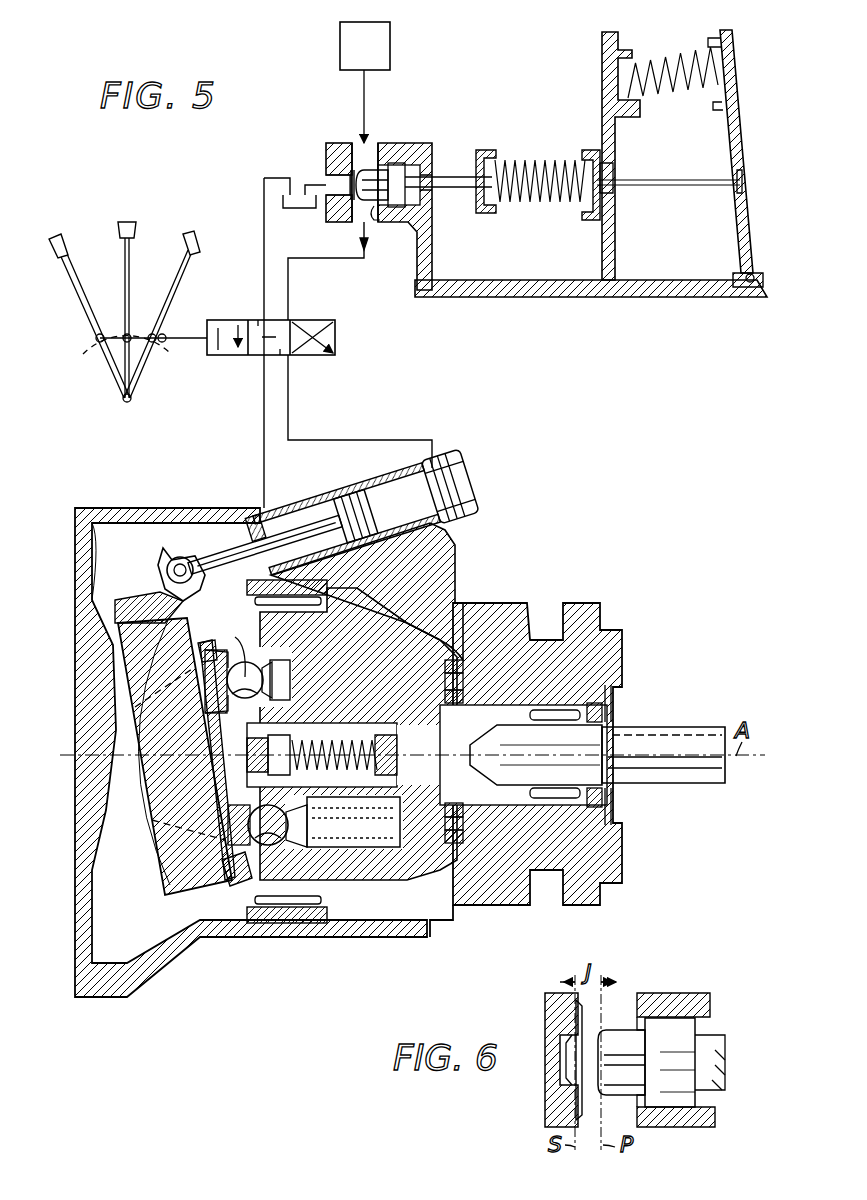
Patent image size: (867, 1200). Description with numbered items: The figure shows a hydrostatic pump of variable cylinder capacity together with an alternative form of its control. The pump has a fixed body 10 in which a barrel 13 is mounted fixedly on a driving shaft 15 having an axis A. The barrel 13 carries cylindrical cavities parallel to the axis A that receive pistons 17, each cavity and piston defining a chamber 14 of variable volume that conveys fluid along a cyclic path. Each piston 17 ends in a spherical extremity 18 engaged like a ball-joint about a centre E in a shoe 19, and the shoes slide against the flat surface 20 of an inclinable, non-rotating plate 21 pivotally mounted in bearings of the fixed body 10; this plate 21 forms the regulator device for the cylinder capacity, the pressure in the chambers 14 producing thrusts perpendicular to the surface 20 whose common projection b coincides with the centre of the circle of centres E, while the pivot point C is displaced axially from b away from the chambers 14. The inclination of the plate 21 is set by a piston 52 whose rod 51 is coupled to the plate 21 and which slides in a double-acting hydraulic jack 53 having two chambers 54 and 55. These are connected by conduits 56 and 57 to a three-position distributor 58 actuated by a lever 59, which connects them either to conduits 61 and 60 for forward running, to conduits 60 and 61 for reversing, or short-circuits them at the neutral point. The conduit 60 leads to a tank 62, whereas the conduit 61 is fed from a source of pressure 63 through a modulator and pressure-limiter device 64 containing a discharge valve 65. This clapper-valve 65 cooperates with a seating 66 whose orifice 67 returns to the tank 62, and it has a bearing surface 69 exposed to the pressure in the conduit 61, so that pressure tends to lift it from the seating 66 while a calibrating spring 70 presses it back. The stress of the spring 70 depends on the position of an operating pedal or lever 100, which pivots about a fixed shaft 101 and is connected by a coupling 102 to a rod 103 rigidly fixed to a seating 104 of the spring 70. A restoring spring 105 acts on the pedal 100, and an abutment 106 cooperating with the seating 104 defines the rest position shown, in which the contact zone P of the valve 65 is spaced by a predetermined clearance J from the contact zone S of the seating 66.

In FIG. 5, the fixed body 10 is at (460, 546).
In FIG. 5, the barrel 13 is at (445, 620).
In FIG. 5, the chambers of variable volume 14 is at (400, 937).
In FIG. 5, the driving shaft 15 is at (665, 727).
In FIG. 5, the pistons 17 is at (357, 848).
In FIG. 5, the spherical extremity 18 is at (318, 775).
In FIG. 5, the shoe 19 is at (274, 868).
In FIG. 5, the surface 20 is at (160, 872).
In FIG. 5, the pivoted plate 21 is at (238, 882).
In FIG. 5, the rod 51 is at (212, 540).
In FIG. 5, the piston 52 is at (347, 504).
In FIG. 5, the double-acting hydraulic jack 53 is at (311, 498).
In FIG. 5, the chamber 54 is at (458, 497).
In FIG. 5, the chamber 55 is at (256, 532).
In FIG. 5, the conduit 56 is at (288, 396).
In FIG. 5, the conduit 57 is at (262, 410).
In FIG. 5, the distributor 58 is at (335, 337).
In FIG. 5, the lever 59 is at (180, 278).
In FIG. 5, the conduit 60 is at (260, 194).
In FIG. 5, the conduit 61 is at (338, 264).
In FIG. 5, the tank 62 is at (300, 216).
In FIG. 5, the source of pressure 63 is at (390, 47).
In FIG. 5, the modulator and pressure-limiter device 64 is at (432, 144).
In FIG. 5, the discharge valve 65 is at (372, 176).
In FIG. 6, the discharge valve 65 is at (620, 1030).
In FIG. 5, the seating 66 is at (350, 168).
In FIG. 6, the seating 66 is at (569, 1080).
In FIG. 5, the orifice 67 is at (326, 176).
In FIG. 5, the bearing surface 69 is at (374, 218).
In FIG. 5, the calibrating spring 70 is at (526, 156).
In FIG. 5, the operating pedal or lever 100 is at (745, 105).
In FIG. 5, the fixed shaft 101 is at (753, 270).
In FIG. 5, the coupling 102 is at (745, 180).
In FIG. 5, the rod 103 is at (678, 185).
In FIG. 5, the seating 104 is at (580, 223).
In FIG. 5, the restoring spring 105 is at (666, 55).
In FIG. 5, the abutment 106 is at (598, 152).